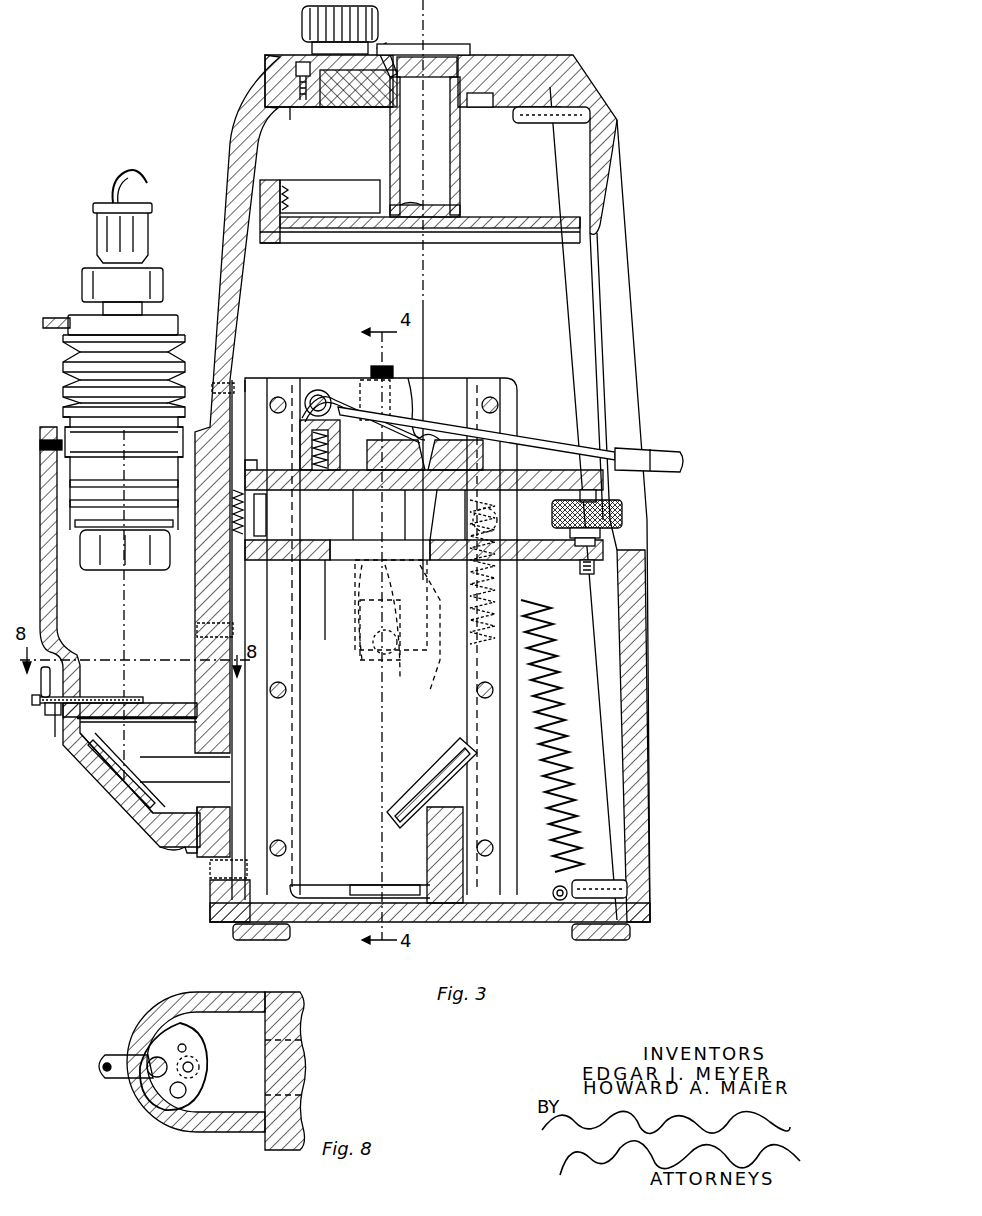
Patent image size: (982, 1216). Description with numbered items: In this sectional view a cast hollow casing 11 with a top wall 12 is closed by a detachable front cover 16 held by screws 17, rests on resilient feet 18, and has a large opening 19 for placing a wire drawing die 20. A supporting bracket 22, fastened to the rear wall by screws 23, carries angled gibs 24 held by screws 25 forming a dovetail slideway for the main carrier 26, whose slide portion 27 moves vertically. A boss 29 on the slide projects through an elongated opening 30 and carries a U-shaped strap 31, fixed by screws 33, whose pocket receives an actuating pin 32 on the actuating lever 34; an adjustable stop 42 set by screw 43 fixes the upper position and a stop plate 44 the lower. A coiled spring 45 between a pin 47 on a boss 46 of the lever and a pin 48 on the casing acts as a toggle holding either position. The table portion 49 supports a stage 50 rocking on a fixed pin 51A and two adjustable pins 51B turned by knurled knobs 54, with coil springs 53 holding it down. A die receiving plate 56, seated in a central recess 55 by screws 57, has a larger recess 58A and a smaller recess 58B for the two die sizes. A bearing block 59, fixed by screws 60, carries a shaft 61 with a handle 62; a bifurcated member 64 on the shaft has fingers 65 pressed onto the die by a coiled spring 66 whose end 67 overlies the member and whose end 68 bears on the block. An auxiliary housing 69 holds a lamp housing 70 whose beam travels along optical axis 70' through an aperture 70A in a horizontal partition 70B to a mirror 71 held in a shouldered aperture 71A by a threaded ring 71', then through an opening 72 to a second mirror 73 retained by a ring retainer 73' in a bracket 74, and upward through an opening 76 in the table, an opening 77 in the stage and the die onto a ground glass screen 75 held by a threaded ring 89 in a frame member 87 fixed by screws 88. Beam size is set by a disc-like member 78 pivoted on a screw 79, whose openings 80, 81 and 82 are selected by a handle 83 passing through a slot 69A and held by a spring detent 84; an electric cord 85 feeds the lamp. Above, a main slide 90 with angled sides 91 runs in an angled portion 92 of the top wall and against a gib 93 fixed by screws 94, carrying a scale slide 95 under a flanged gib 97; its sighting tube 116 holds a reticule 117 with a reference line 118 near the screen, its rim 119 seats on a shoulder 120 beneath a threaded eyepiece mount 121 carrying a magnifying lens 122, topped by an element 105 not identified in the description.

In FIG. 3, the housing 11 is at (246, 100).
In FIG. 3, the top plate 12 is at (322, 108).
In FIG. 3, the housing wall 16 is at (612, 140).
In FIG. 3, the gasket 17 is at (592, 104).
In FIG. 3, the foot 18 is at (270, 940).
In FIG. 3, the housing shell 19 is at (605, 345).
In FIG. 3, the rod support 20 is at (505, 440).
In FIG. 3, the frame bracket 22 is at (452, 378).
In FIG. 3, the gasket 23 is at (212, 382).
In FIG. 3, the frame post 24 is at (284, 378).
In FIG. 3, the screw 25 is at (277, 396).
In FIG. 3, the spring 26 is at (488, 642).
In FIG. 3, the chamber 27 is at (348, 740).
In FIG. 3, the mechanism housing 29 is at (355, 632).
In FIG. 3, the mechanism 30 is at (355, 605).
In FIG. 3, the wire 31 is at (362, 662).
In FIG. 3, the wire 32 is at (397, 632).
In FIG. 3, the plate opening 33 is at (401, 547).
In FIG. 3, the lead 34 is at (436, 627).
In FIG. 3, the contact 42 is at (393, 378).
In FIG. 3, the contact 43 is at (392, 368).
In FIG. 3, the base block 44 is at (352, 885).
In FIG. 3, the spring 45 is at (538, 734).
In FIG. 3, the rod 46 is at (465, 503).
In FIG. 3, the pin 47 is at (482, 507).
In FIG. 3, the pin 48 is at (561, 902).
In FIG. 3, the nut 49 is at (583, 576).
In FIG. 3, the lever rod 50 is at (572, 458).
In FIG. 3, the spring 51A is at (266, 527).
In FIG. 3, the nut 51B is at (600, 494).
In FIG. 3, the plate 53 is at (212, 546).
In FIG. 3, the knurled knob 54 is at (624, 514).
In FIG. 3, the block 55 is at (319, 468).
In FIG. 3, the plate 56 is at (500, 470).
In FIG. 3, the rod 57 is at (528, 442).
In FIG. 3, the block 58A is at (425, 432).
In FIG. 3, the block 58B is at (393, 503).
In FIG. 3, the pivot 59 is at (318, 390).
In FIG. 3, the spring 60 is at (331, 473).
In FIG. 3, the spring arm 61 is at (322, 392).
In FIG. 3, the handle 62 is at (615, 450).
In FIG. 3, the switch 64 is at (370, 399).
In FIG. 3, the wire 65 is at (416, 407).
In FIG. 3, the spring arm 66 is at (338, 400).
In FIG. 3, the contact block 67 is at (372, 368).
In FIG. 3, the arm end 68 is at (298, 425).
In FIG. 3, the bracket box 69 is at (40, 570).
In FIG. 8, the bracket box 69 is at (232, 1140).
In FIG. 3, the bracket wall 69A is at (77, 683).
In FIG. 3, the bellows 70 is at (106, 491).
In FIG. 3, the bellows end 70' is at (105, 587).
In FIG. 3, the bellows base 70A is at (128, 724).
In FIG. 3, the bellows flange 70B is at (160, 706).
In FIG. 3, the tube 71 is at (122, 793).
In FIG. 3, the tube end 71' is at (82, 790).
In FIG. 3, the tube channel 71A is at (145, 802).
In FIG. 3, the wall 72 is at (205, 768).
In FIG. 8, the wall 72 is at (298, 1054).
In FIG. 3, the arm 73 is at (411, 783).
In FIG. 3, the arm end 73' is at (417, 745).
In FIG. 3, the block 74 is at (428, 850).
In FIG. 3, the plate 75 is at (510, 230).
In FIG. 3, the guide 76 is at (340, 560).
In FIG. 3, the rod 77 is at (435, 515).
In FIG. 3, the plate 78 is at (115, 698).
In FIG. 8, the plate 78 is at (168, 1045).
In FIG. 3, the cam 79 is at (84, 697).
In FIG. 8, the cam 79 is at (142, 1090).
In FIG. 8, the hole 80 is at (187, 1046).
In FIG. 8, the pivot 81 is at (199, 1067).
In FIG. 8, the hole 82 is at (187, 1091).
In FIG. 3, the pin arm 83 is at (40, 704).
In FIG. 8, the pin arm 83 is at (107, 1078).
In FIG. 3, the spring 84 is at (56, 712).
In FIG. 3, the cable 85 is at (142, 186).
In FIG. 3, the block 87 is at (270, 245).
In FIG. 3, the spring 88 is at (290, 196).
In FIG. 3, the seat 89 is at (295, 238).
In FIG. 3, the cover 90 is at (494, 58).
In FIG. 3, the plate 91 is at (340, 108).
In FIG. 3, the cover 92 is at (535, 58).
In FIG. 3, the top plate 93 is at (278, 64).
In FIG. 3, the screw 94 is at (292, 108).
In FIG. 3, the plate 95 is at (363, 108).
In FIG. 3, the screw 97 is at (300, 58).
In FIG. 3, the cap 105 is at (372, 22).
In FIG. 3, the cylinder 116 is at (461, 146).
In FIG. 3, the cylinder bottom 117 is at (452, 212).
In FIG. 3, the seal 118 is at (410, 208).
In FIG. 3, the flange 119 is at (476, 60).
In FIG. 3, the block 120 is at (470, 95).
In FIG. 3, the ring 121 is at (470, 52).
In FIG. 3, the clamp 122 is at (432, 44).